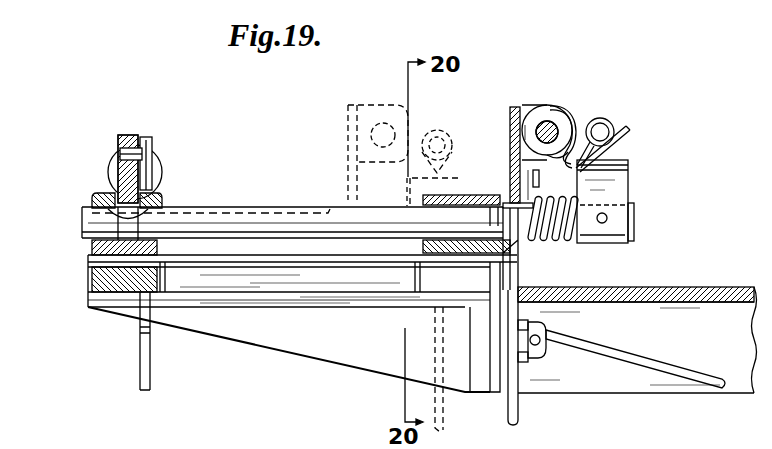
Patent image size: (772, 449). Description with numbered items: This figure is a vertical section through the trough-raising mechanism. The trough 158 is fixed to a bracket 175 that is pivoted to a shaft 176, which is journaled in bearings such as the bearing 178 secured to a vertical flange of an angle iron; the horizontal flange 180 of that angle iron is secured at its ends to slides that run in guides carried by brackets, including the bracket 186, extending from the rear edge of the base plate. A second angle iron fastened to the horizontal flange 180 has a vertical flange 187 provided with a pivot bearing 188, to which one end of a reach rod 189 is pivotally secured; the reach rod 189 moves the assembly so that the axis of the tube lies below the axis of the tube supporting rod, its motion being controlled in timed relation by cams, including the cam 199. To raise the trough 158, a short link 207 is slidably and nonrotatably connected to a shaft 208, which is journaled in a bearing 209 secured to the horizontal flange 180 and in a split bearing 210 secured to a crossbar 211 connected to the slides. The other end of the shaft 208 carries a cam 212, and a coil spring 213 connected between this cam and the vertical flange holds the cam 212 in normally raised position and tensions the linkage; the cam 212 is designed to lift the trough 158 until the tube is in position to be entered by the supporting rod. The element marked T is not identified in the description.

The short link 207 is at (172, 118).
The shaft 208 is at (82, 223).
The split bearing 210 is at (152, 200).
The crossbar 211 is at (92, 250).
The cam 199 is at (350, 148).
The bearing 209 is at (456, 194).
The bearing 178 is at (560, 92).
The shaft 176 is at (553, 128).
The bracket 175 is at (566, 140).
The roller T is at (612, 122).
The trough 158 is at (622, 138).
The cam 212 is at (628, 186).
The coil spring 213 is at (552, 240).
The horizontal flange 180 is at (500, 246).
The pivot bearing 188 is at (545, 328).
The reach rod 189 is at (672, 350).
The vertical flange 187 is at (493, 432).
The bracket 186 is at (240, 342).